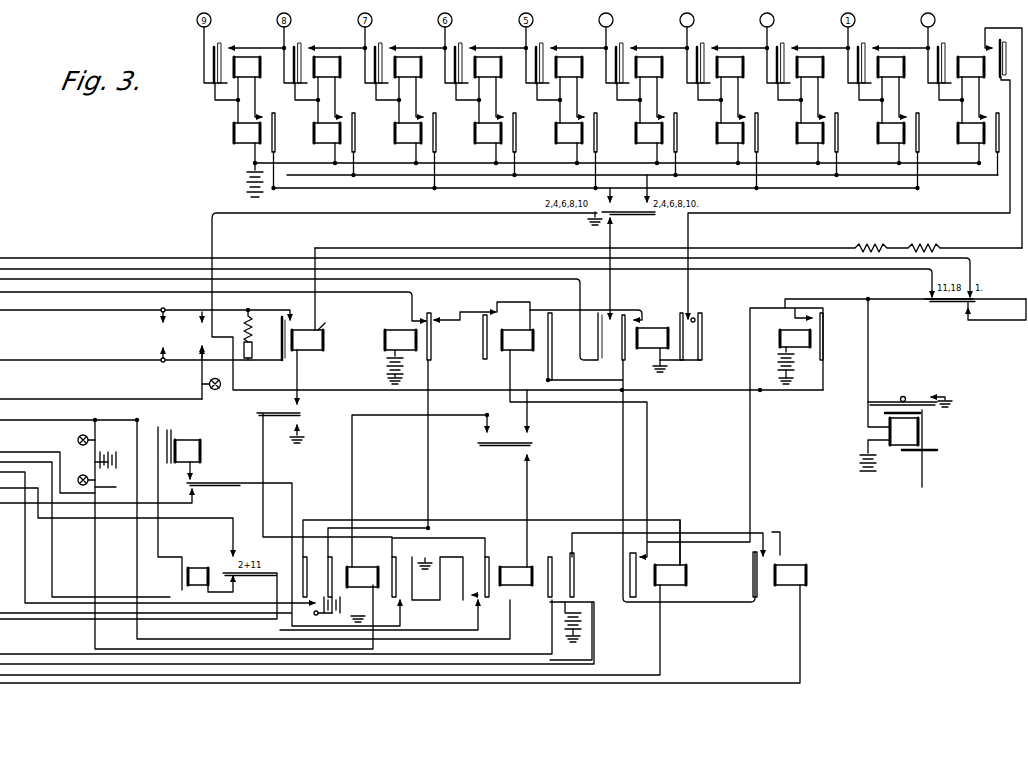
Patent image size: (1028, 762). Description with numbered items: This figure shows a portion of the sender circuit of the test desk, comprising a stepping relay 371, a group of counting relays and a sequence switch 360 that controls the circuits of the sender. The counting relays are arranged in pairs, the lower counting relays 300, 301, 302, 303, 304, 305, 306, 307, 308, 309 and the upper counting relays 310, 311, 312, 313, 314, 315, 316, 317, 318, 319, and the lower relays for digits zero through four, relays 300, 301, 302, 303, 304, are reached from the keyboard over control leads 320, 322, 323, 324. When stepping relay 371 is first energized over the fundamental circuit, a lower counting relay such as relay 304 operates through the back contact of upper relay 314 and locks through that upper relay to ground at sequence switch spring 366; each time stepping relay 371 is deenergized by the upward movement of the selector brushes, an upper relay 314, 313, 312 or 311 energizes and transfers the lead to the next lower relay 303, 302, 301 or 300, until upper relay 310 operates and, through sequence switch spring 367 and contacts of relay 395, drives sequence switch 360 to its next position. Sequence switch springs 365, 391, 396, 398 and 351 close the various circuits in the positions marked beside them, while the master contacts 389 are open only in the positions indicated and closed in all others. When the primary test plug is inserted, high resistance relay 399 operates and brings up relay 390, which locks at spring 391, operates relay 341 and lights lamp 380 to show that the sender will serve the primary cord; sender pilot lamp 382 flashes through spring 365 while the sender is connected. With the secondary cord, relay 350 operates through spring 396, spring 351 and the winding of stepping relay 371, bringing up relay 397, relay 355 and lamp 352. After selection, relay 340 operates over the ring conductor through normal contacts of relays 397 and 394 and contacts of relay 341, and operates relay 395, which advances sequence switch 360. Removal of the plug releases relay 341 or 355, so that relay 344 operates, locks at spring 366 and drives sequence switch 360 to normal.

The lower No. 0 counting relay 300 is at (962, 140).
The lower No. 1 counting relay 301 is at (882, 140).
The lower No. 2 counting relay 302 is at (801, 140).
The lower No. 3 counting relay 303 is at (721, 140).
The lower No. 4 counting relay 304 is at (640, 140).
The relay 305 is at (560, 140).
The relay 306 is at (479, 140).
The relay 307 is at (399, 140).
The relay 308 is at (318, 140).
The relay 309 is at (238, 140).
The upper No. 0 counting relay 310 is at (975, 64).
The upper No. 1 counting relay 311 is at (894, 67).
The upper No. 2 counting relay 312 is at (813, 67).
The upper No. 3 counting relay 313 is at (733, 67).
The upper No. 4 counting relay 314 is at (652, 67).
The relay 315 is at (572, 67).
The relay 316 is at (491, 67).
The relay 317 is at (411, 67).
The relay 318 is at (330, 67).
The relay 319 is at (250, 67).
The lead 320 is at (935, 18).
The lead 322 is at (774, 18).
The lead 323 is at (694, 18).
The control lead 324 is at (613, 18).
The relay 340 is at (512, 351).
The relay 341 is at (680, 575).
The relay 344 is at (805, 347).
The relay 350 is at (200, 450).
The sequence switch spring 351 is at (240, 486).
The lamp 352 is at (78, 438).
The relay 355 is at (783, 572).
The sequence switch 360 is at (892, 448).
The sequence switch spring 365 is at (160, 335).
The sequence switch spring 366 is at (645, 214).
The sequence switch spring 367 is at (967, 309).
The stepping relay 371 is at (300, 352).
The lamp signal 380 is at (90, 470).
The lamp 382 is at (215, 379).
The master contacts 389 is at (938, 405).
The relay 390 is at (360, 567).
The sequence switch spring 391 is at (480, 446).
The relay 394 is at (386, 340).
The relay 395 is at (650, 328).
The sequence switch spring 396 is at (309, 475).
The relay 397 is at (508, 567).
The sequence switch spring 398 is at (265, 572).
The relay 399 is at (195, 566).